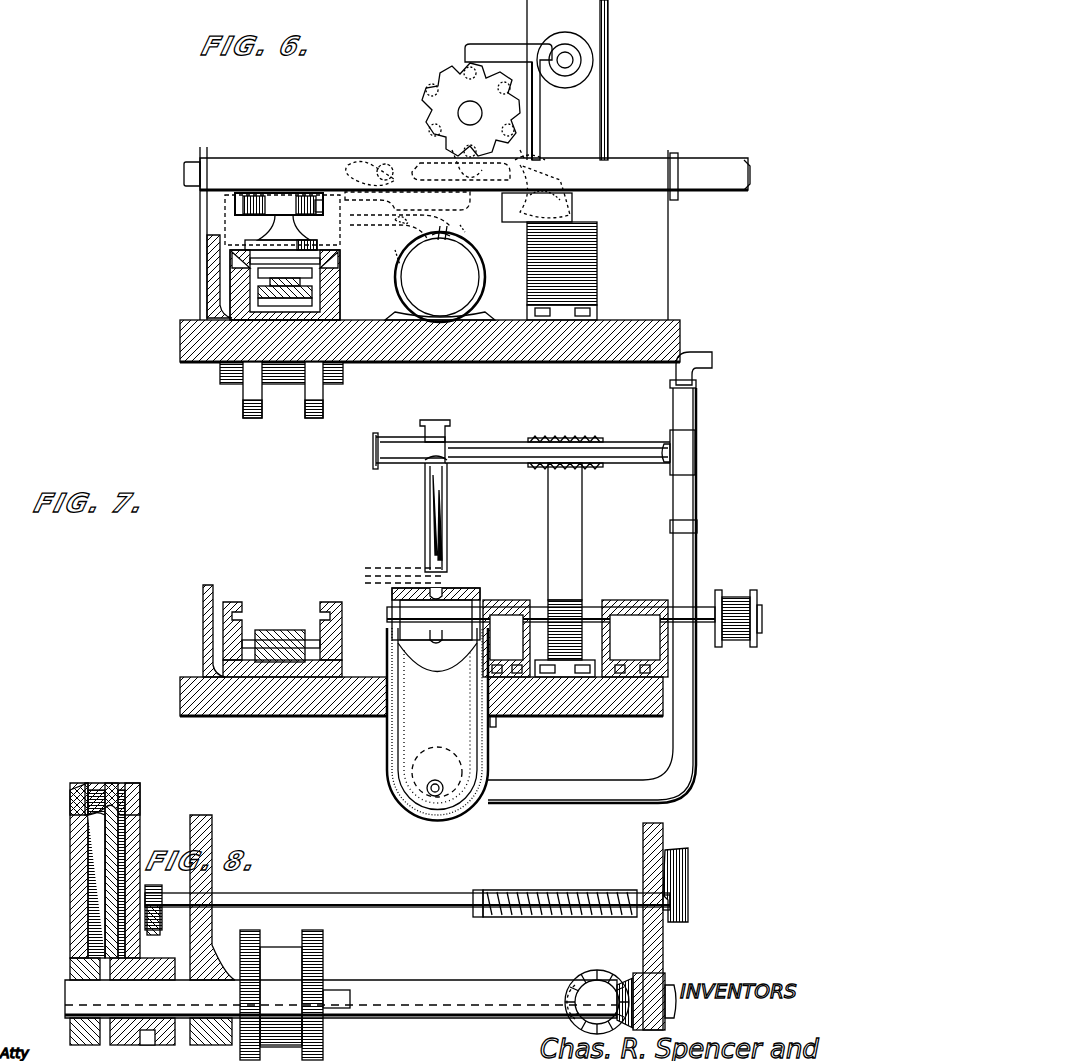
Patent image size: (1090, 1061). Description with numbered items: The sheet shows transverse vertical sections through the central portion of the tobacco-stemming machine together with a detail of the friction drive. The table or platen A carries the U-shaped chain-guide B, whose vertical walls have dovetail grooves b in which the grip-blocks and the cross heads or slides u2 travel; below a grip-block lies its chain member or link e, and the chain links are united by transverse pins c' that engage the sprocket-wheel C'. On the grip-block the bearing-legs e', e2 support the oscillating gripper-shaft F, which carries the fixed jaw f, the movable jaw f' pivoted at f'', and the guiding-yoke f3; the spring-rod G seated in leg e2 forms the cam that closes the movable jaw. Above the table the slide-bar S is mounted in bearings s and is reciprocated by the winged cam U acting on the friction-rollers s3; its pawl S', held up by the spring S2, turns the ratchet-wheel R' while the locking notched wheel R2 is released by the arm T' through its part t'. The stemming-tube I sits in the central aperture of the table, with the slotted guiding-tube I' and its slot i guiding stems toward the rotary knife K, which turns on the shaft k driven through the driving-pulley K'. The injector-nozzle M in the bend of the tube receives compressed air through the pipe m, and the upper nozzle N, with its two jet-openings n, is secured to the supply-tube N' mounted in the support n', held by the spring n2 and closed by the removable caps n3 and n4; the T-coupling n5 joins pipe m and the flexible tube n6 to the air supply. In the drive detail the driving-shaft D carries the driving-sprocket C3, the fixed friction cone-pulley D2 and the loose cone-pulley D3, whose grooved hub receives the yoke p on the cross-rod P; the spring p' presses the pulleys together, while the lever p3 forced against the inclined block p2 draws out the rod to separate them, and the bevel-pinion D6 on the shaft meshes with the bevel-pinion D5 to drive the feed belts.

In FIG. 6, the slide-bar S is at (467, 162).
In FIG. 6, the bearings s is at (205, 182).
In FIG. 6, the standard H is at (200, 268).
In FIG. 6, the arm T' is at (529, 82).
In FIG. 6, the locking notched wheel R2 is at (430, 95).
In FIG. 6, the ratchet-wheel R' is at (451, 112).
In FIG. 6, the spring S2 is at (428, 158).
In FIG. 6, the pawl S' is at (513, 149).
In FIG. 6, the part of arm t' is at (573, 174).
In FIG. 6, the oscillating gripper-shaft F is at (407, 182).
In FIG. 6, the guiding-yoke f3 is at (420, 207).
In FIG. 6, the movable jaw f' is at (459, 212).
In FIG. 6, the fixed jaw f is at (459, 222).
In FIG. 6, the pivot f'' is at (390, 251).
In FIG. 6, the slot i is at (440, 277).
In FIG. 6, the slotted guiding-tube I' is at (440, 277).
In FIG. 6, the bearing-leg e2 is at (228, 192).
In FIG. 6, the winged cam U is at (258, 192).
In FIG. 6, the spring-rod G is at (322, 192).
In FIG. 6, the bearing-leg e' is at (329, 163).
In FIG. 6, the friction-rollers s3 is at (320, 196).
In FIG. 6, the dovetail grooves b is at (245, 247).
In FIG. 7, the dovetail grooves b is at (245, 605).
In FIG. 6, the chain-guide B is at (250, 284).
In FIG. 7, the chain-guide B is at (230, 632).
In FIG. 6, the cross heads or slides u2 is at (320, 275).
In FIG. 6, the transverse pins c' is at (315, 301).
In FIG. 6, the chain member or link e is at (191, 282).
In FIG. 6, the table or platen A is at (620, 328).
In FIG. 7, the table or platen A is at (310, 712).
In FIG. 6, the sprocket-wheel C' is at (264, 390).
In FIG. 7, the sprocket-wheel C' is at (187, 631).
In FIG. 7, the flexible tube n6 is at (705, 350).
In FIG. 7, the pipe m is at (690, 665).
In FIG. 7, the T-coupling n5 is at (695, 455).
In FIG. 7, the supply-tube N' is at (557, 431).
In FIG. 7, the spring n2 is at (565, 440).
In FIG. 7, the removable cap or plug n3 is at (374, 450).
In FIG. 7, the removable cap or plug n4 is at (436, 425).
In FIG. 7, the nozzle N is at (417, 514).
In FIG. 7, the jet-openings n is at (420, 529).
In FIG. 7, the support n' is at (577, 570).
In FIG. 7, the rotary knife K is at (441, 612).
In FIG. 7, the shaft k is at (605, 610).
In FIG. 7, the driving-pulley K' is at (738, 596).
In FIG. 7, the stemming-tube I is at (414, 724).
In FIG. 7, the injector-nozzle M is at (428, 790).
In FIG. 8, the fixed friction cone-pulley D2 is at (80, 805).
In FIG. 8, the loose cone-pulley D3 is at (138, 790).
In FIG. 8, the driving-shaft D is at (422, 985).
In FIG. 8, the yoke p is at (407, 897).
In FIG. 8, the cross-rod P is at (330, 895).
In FIG. 8, the spring p' is at (555, 881).
In FIG. 8, the lever p3 is at (675, 865).
In FIG. 8, the block p2 is at (692, 885).
In FIG. 8, the driving-sprocket C3 is at (302, 970).
In FIG. 8, the bevel-pinion D5 is at (600, 972).
In FIG. 8, the bevel-pinion D6 is at (665, 975).